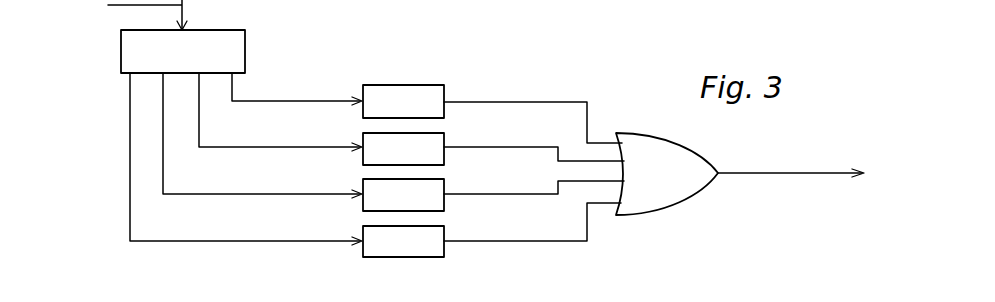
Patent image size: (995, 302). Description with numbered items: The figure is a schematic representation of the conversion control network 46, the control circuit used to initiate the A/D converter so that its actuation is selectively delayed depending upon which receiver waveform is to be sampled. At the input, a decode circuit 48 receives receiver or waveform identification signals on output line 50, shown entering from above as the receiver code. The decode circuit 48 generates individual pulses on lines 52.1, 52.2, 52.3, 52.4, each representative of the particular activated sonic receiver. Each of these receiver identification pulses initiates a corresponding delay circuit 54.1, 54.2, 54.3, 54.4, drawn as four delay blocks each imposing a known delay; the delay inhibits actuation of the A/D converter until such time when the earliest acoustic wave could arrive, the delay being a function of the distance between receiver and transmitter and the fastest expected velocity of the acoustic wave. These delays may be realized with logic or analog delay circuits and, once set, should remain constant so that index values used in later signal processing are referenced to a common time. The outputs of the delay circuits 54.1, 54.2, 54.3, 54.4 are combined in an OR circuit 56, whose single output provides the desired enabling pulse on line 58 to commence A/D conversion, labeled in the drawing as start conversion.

The output line 50 is at (125, 5).
The decode circuit 48 is at (240, 44).
The line 52.1 is at (235, 88).
The line 52.2 is at (197, 133).
The line 52.3 is at (163, 150).
The line 52.4 is at (128, 100).
The delay circuit 54.1 is at (432, 83).
The delay circuit 54.2 is at (403, 149).
The delay circuit 54.3 is at (403, 195).
The delay circuit 54.4 is at (362, 253).
The conversion control network 46 is at (552, 92).
The OR circuit 56 is at (684, 206).
The line 58 is at (806, 171).